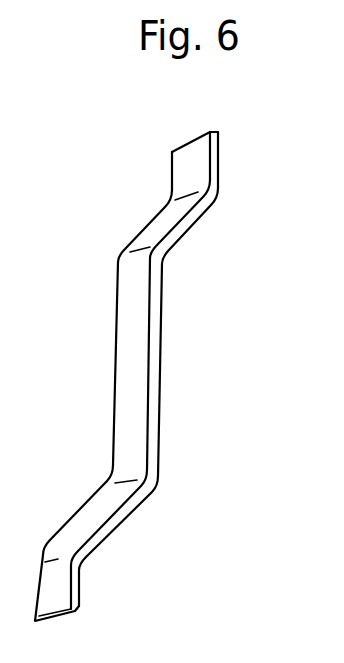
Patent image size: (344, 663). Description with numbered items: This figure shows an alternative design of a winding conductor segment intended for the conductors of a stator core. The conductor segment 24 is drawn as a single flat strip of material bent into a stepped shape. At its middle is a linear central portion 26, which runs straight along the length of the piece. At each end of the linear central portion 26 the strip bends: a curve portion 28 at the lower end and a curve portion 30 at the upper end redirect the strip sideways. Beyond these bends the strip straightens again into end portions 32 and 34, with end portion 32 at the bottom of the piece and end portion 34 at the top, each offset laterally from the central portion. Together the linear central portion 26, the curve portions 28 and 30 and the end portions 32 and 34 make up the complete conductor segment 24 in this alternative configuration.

The conductor segment 24 is at (149, 376).
The linear central portion 26 is at (120, 320).
The curve portion 28 is at (83, 517).
The curve portion 30 is at (153, 226).
The end portion 32 is at (85, 588).
The end portion 34 is at (218, 152).